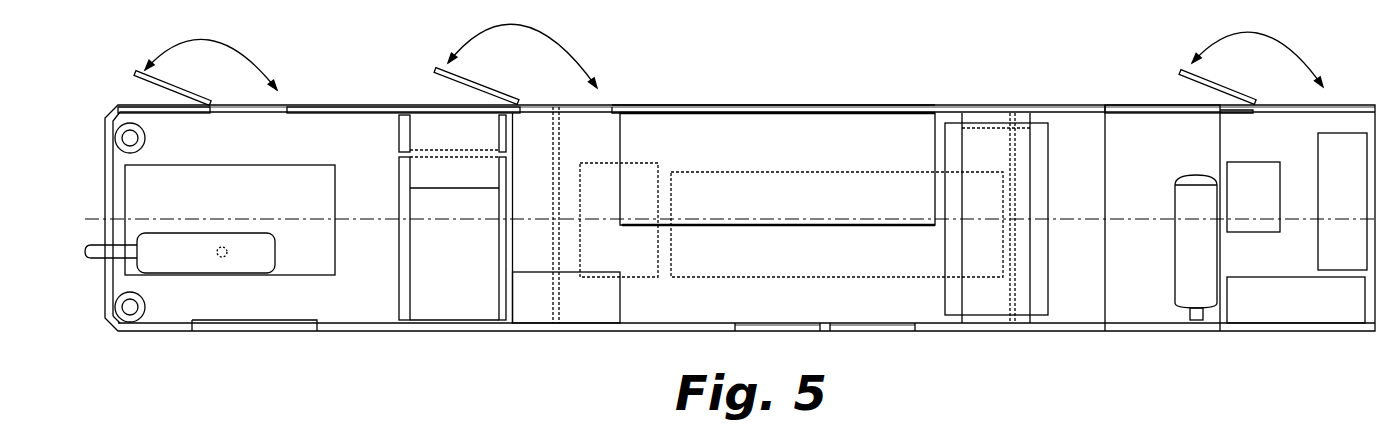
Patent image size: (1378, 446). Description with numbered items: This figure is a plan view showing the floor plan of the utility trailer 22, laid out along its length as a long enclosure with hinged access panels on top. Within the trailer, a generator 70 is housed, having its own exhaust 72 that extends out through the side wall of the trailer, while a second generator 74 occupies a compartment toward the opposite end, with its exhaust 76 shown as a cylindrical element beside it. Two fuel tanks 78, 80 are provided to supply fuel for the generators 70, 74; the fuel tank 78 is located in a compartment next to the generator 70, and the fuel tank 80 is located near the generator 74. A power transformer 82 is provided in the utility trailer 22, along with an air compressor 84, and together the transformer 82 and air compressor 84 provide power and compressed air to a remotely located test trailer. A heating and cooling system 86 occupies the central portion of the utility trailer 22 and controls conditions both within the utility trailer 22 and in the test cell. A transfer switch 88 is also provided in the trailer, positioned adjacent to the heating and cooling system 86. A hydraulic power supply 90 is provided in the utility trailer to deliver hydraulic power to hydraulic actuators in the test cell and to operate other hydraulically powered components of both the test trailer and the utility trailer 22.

The utility trailer 22 is at (830, 107).
The generator 70 is at (320, 175).
The exhaust 72 is at (112, 253).
The generator 74 is at (1127, 307).
The exhaust 76 is at (1192, 318).
The fuel tank 78 is at (455, 295).
The fuel tank 80 is at (962, 300).
The power transformer 82 is at (1253, 172).
The air compressor 84 is at (1002, 292).
The heating and cooling system 86 is at (762, 132).
The transfer switch 88 is at (582, 302).
The hydraulic power supply 90 is at (423, 120).